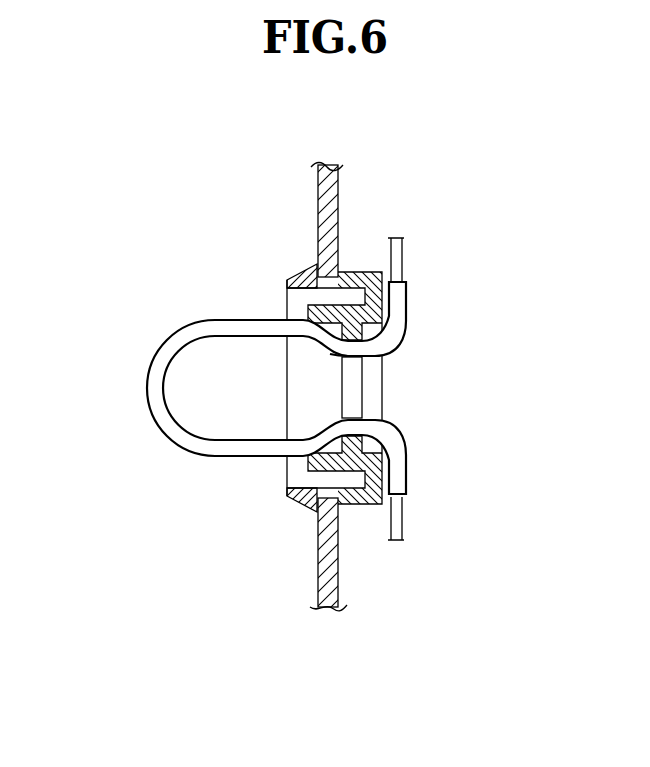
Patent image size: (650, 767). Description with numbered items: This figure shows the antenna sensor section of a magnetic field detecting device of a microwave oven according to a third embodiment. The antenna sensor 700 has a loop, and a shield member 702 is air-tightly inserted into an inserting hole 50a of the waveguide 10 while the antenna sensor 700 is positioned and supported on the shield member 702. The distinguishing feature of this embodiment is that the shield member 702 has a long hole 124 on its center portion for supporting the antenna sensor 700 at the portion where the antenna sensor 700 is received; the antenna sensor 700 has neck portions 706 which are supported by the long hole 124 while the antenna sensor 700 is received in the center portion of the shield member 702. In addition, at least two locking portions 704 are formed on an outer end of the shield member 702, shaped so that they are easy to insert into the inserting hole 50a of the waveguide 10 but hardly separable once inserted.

The waveguide 10 is at (335, 192).
The inserting hole 50a is at (348, 510).
The long hole 124 is at (358, 393).
The antenna sensor 700 is at (170, 337).
The shield member 702 is at (373, 480).
The locking portions 704 is at (297, 270).
The neck portions 706 is at (352, 351).